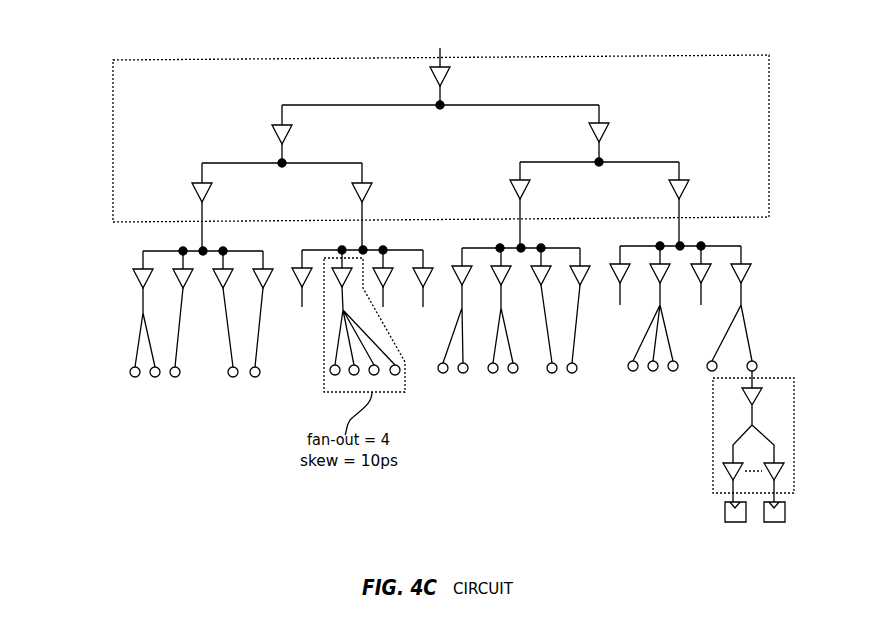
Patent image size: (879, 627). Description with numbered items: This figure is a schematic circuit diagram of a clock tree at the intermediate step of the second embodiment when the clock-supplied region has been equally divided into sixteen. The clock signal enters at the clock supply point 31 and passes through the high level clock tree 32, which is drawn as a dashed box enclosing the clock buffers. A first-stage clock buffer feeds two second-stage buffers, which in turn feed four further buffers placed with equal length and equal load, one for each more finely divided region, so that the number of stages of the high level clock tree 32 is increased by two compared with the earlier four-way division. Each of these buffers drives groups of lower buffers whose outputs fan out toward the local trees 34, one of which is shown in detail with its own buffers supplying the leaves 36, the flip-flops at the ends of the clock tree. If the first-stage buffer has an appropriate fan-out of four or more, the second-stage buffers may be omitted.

The clock supply point 31 is at (455, 30).
The global clock tree 32 is at (112, 212).
The local tree 34 is at (713, 480).
The leaves 36 is at (735, 522).